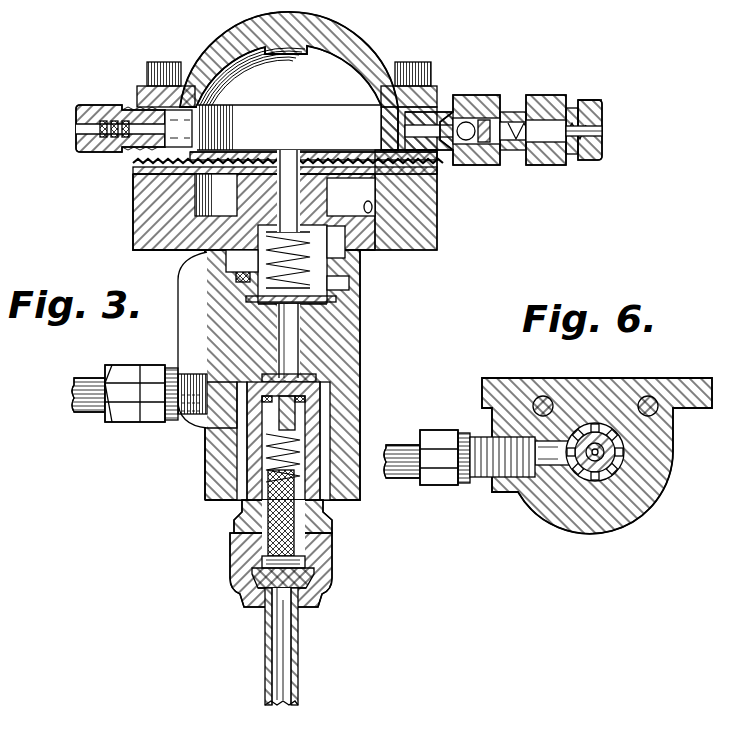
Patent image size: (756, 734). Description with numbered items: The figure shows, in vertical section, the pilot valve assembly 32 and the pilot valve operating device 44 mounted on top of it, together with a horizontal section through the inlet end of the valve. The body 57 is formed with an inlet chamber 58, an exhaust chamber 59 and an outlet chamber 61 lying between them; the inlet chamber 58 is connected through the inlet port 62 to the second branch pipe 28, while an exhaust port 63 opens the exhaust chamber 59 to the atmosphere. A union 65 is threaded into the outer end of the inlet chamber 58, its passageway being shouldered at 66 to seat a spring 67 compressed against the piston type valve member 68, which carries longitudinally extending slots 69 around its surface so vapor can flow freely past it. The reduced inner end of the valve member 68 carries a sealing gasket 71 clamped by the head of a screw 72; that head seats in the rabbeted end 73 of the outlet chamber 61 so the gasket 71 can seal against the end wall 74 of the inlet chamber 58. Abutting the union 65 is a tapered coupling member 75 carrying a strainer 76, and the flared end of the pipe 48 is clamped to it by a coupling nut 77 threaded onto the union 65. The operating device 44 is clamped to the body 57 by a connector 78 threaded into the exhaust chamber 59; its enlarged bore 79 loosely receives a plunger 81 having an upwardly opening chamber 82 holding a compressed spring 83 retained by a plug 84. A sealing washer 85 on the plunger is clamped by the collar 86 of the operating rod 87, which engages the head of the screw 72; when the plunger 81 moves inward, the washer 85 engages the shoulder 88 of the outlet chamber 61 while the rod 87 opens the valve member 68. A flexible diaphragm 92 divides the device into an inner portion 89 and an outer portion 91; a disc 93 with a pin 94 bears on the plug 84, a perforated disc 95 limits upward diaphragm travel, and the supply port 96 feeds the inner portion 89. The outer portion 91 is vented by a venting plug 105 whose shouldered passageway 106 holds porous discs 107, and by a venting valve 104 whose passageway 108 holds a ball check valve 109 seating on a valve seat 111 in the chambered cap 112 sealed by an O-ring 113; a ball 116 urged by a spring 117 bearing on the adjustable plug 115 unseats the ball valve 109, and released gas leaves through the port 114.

In FIG. 3, the second branch pipe 28 is at (106, 386).
In FIG. 6, the second branch pipe 28 is at (392, 478).
In FIG. 3, the pilot valve assembly 32 is at (362, 350).
In FIG. 6, the pilot valve assembly 32 is at (550, 521).
In FIG. 3, the pilot valve operating device 44 is at (372, 52).
In FIG. 3, the pipe 48 is at (270, 650).
In FIG. 3, the body 57 is at (356, 332).
In FIG. 6, the body 57 is at (654, 489).
In FIG. 3, the inlet chamber 58 is at (322, 392).
In FIG. 6, the inlet chamber 58 is at (624, 456).
In FIG. 3, the exhaust chamber 59 is at (335, 296).
In FIG. 3, the outlet chamber 61 is at (298, 348).
In FIG. 3, the inlet port 62 is at (256, 418).
In FIG. 6, the inlet port 62 is at (548, 468).
In FIG. 3, the exhaust port 63 is at (182, 299).
In FIG. 3, the union 65 is at (324, 518).
In FIG. 3, the shoulder 66 is at (306, 556).
In FIG. 3, the spring 67 is at (270, 505).
In FIG. 3, the piston type valve member 68 is at (300, 425).
In FIG. 6, the piston type valve member 68 is at (590, 424).
In FIG. 6, the longitudinally extending slots 69 is at (602, 482).
In FIG. 3, the sealing gasket 71 is at (316, 378).
In FIG. 3, the screw 72 is at (262, 382).
In FIG. 3, the rabbeted end 73 is at (279, 400).
In FIG. 3, the end wall 74 is at (266, 436).
In FIG. 3, the tapered coupling member 75 is at (314, 596).
In FIG. 3, the strainer 76 is at (314, 571).
In FIG. 3, the coupling nut 77 is at (234, 574).
In FIG. 3, the connector 78 is at (336, 193).
In FIG. 3, the enlarged bore 79 is at (363, 207).
In FIG. 3, the plunger 81 is at (338, 262).
In FIG. 3, the upwardly opening chamber 82 is at (236, 276).
In FIG. 3, the compressed spring 83 is at (232, 258).
In FIG. 3, the plug 84 is at (258, 232).
In FIG. 3, the sealing washer 85 is at (250, 299).
In FIG. 3, the collar 86 is at (312, 300).
In FIG. 3, the operating rod 87 is at (280, 322).
In FIG. 3, the shoulder 88 is at (281, 320).
In FIG. 3, the inner portion 89 is at (192, 204).
In FIG. 3, the outer portion 91 is at (298, 93).
In FIG. 3, the flexible diaphragm 92 is at (266, 160).
In FIG. 3, the disc 93 is at (350, 158).
In FIG. 3, the pin 94 is at (318, 158).
In FIG. 3, the perforated disc 95 is at (234, 158).
In FIG. 3, the supply port 96 is at (396, 244).
In FIG. 3, the venting valve 104 is at (546, 96).
In FIG. 3, the venting plug 105 is at (78, 150).
In FIG. 3, the shouldered passageway 106 is at (150, 128).
In FIG. 3, the porous discs 107 is at (126, 121).
In FIG. 3, the passageway 108 is at (420, 124).
In FIG. 3, the ball check valve 109 is at (466, 118).
In FIG. 3, the valve seat 111 is at (508, 152).
In FIG. 3, the chambered cap 112 is at (552, 166).
In FIG. 3, the O-ring 113 is at (468, 142).
In FIG. 3, the port 114 is at (603, 131).
In FIG. 3, the plug 115 is at (596, 112).
In FIG. 3, the ball 116 is at (514, 120).
In FIG. 3, the spring 117 is at (538, 155).